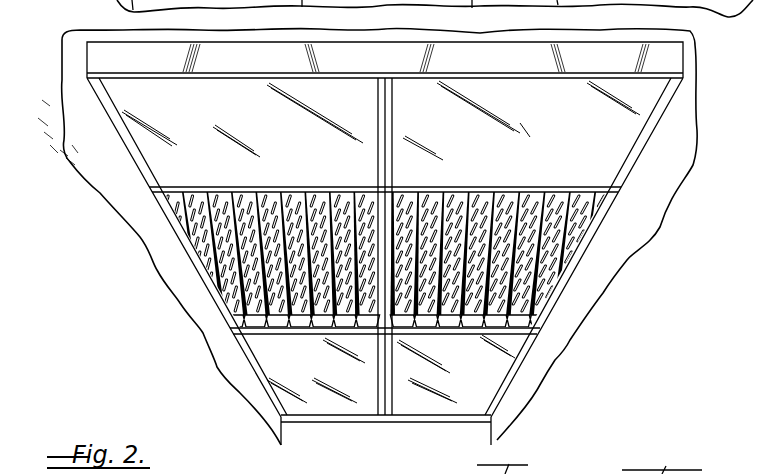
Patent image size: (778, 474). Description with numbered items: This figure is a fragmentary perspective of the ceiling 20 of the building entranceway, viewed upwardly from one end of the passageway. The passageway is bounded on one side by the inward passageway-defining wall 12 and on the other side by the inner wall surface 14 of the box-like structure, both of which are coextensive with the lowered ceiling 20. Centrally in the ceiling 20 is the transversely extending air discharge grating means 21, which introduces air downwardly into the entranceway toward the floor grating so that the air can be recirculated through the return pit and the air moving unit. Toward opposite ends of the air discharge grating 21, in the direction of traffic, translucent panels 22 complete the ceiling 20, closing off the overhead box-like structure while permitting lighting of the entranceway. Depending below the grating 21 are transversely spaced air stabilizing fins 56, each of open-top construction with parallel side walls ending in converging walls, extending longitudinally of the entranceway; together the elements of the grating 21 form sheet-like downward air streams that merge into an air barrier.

The passageway-defining wall 12 is at (662, 188).
The inner wall surface 14 is at (157, 240).
The ceiling 20 is at (687, 55).
The air discharge grating means 21 is at (518, 200).
The translucent panels 22 is at (405, 83).
The air stabilizing fins 56 is at (327, 320).